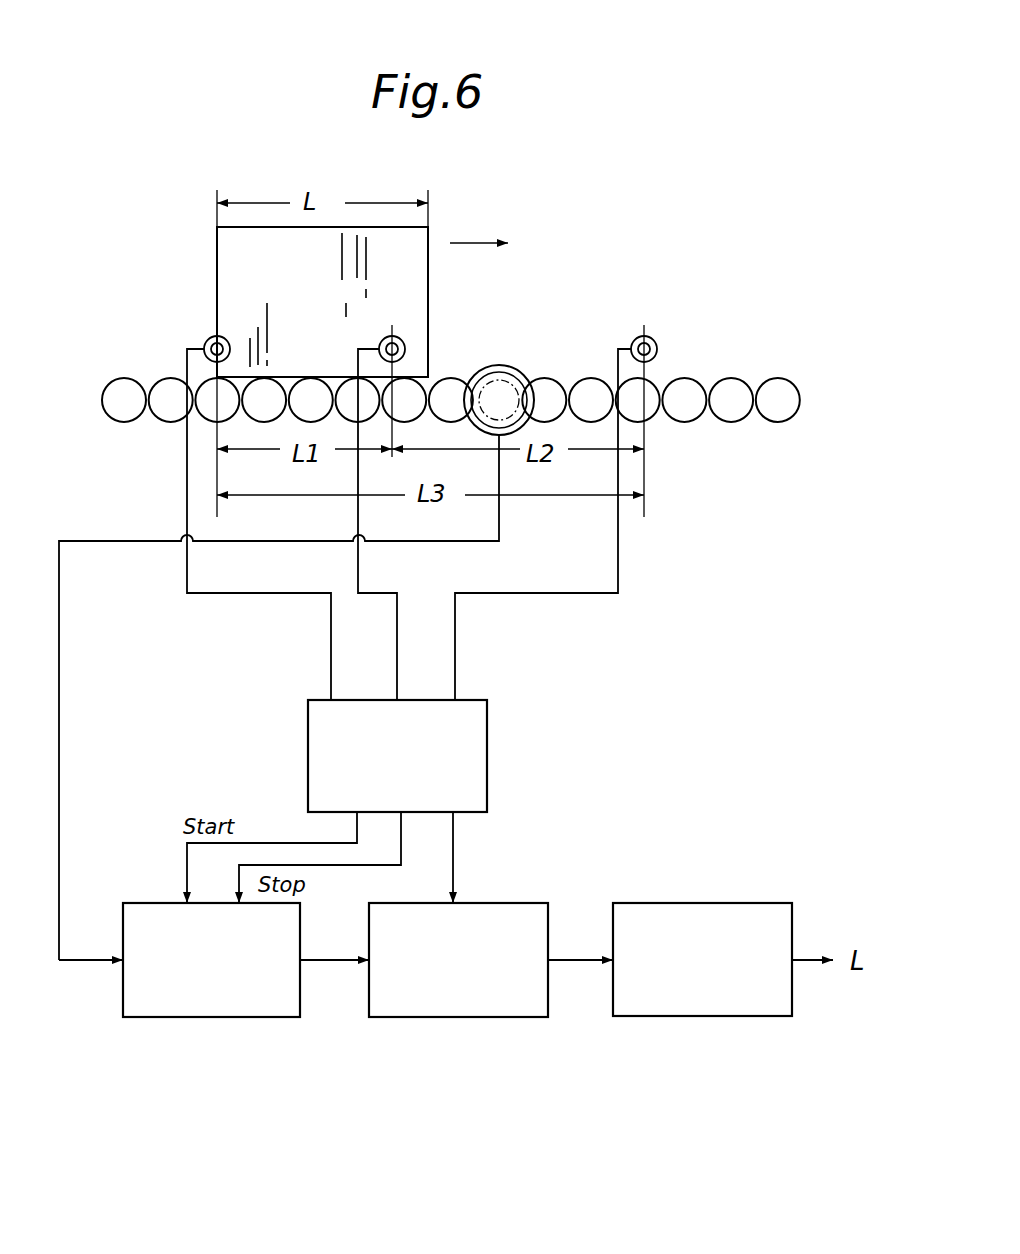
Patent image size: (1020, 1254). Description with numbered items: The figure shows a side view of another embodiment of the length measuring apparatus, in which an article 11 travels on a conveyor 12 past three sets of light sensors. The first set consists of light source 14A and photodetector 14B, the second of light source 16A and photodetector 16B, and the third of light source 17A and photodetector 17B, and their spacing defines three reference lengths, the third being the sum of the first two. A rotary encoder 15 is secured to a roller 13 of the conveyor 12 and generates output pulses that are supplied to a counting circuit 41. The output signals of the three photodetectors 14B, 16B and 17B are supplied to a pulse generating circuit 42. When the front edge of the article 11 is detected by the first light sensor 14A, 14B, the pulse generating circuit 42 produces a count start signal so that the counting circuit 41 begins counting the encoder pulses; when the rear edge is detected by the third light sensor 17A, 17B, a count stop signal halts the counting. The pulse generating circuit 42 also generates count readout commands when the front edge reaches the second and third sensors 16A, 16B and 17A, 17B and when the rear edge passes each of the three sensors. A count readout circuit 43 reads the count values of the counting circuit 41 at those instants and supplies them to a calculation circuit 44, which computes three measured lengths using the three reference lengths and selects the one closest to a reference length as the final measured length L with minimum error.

The article 11 is at (224, 257).
The conveyor 12 is at (436, 360).
The roller 13 is at (110, 380).
The light source 14A is at (148, 397).
The photodetector 14B is at (208, 341).
The rotary encoder 15 is at (515, 370).
The light source 16A is at (463, 366).
The photodetector 16B is at (404, 340).
The light source 17A is at (695, 398).
The photodetector 17B is at (655, 340).
The counting circuit 41 is at (203, 1005).
The pulse generating circuit 42 is at (472, 750).
The count readout circuit 43 is at (455, 1018).
The calculation circuit 44 is at (714, 1017).